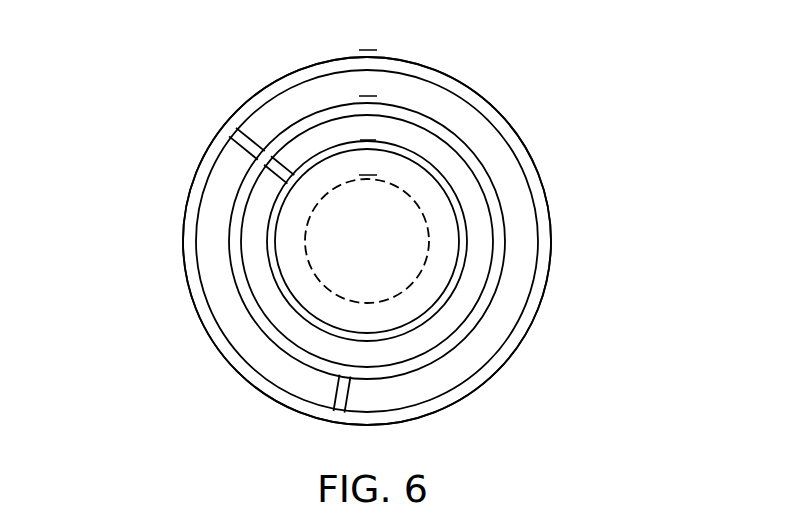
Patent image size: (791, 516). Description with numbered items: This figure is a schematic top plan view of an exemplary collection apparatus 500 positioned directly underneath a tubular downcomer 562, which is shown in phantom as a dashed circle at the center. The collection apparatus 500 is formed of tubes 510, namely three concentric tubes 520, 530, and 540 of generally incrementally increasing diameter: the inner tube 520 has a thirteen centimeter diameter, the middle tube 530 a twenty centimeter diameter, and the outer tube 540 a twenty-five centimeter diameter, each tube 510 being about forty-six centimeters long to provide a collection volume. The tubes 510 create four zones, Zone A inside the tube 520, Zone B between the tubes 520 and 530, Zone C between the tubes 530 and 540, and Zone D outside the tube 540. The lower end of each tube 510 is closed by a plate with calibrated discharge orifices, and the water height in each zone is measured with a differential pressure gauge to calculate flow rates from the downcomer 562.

The collection apparatus 500 is at (138, 75).
The tubes 510 is at (138, 404).
The tube 520 is at (438, 172).
The tube 530 is at (502, 208).
The tube 540 is at (552, 247).
The tubular downcomer 562 is at (407, 282).